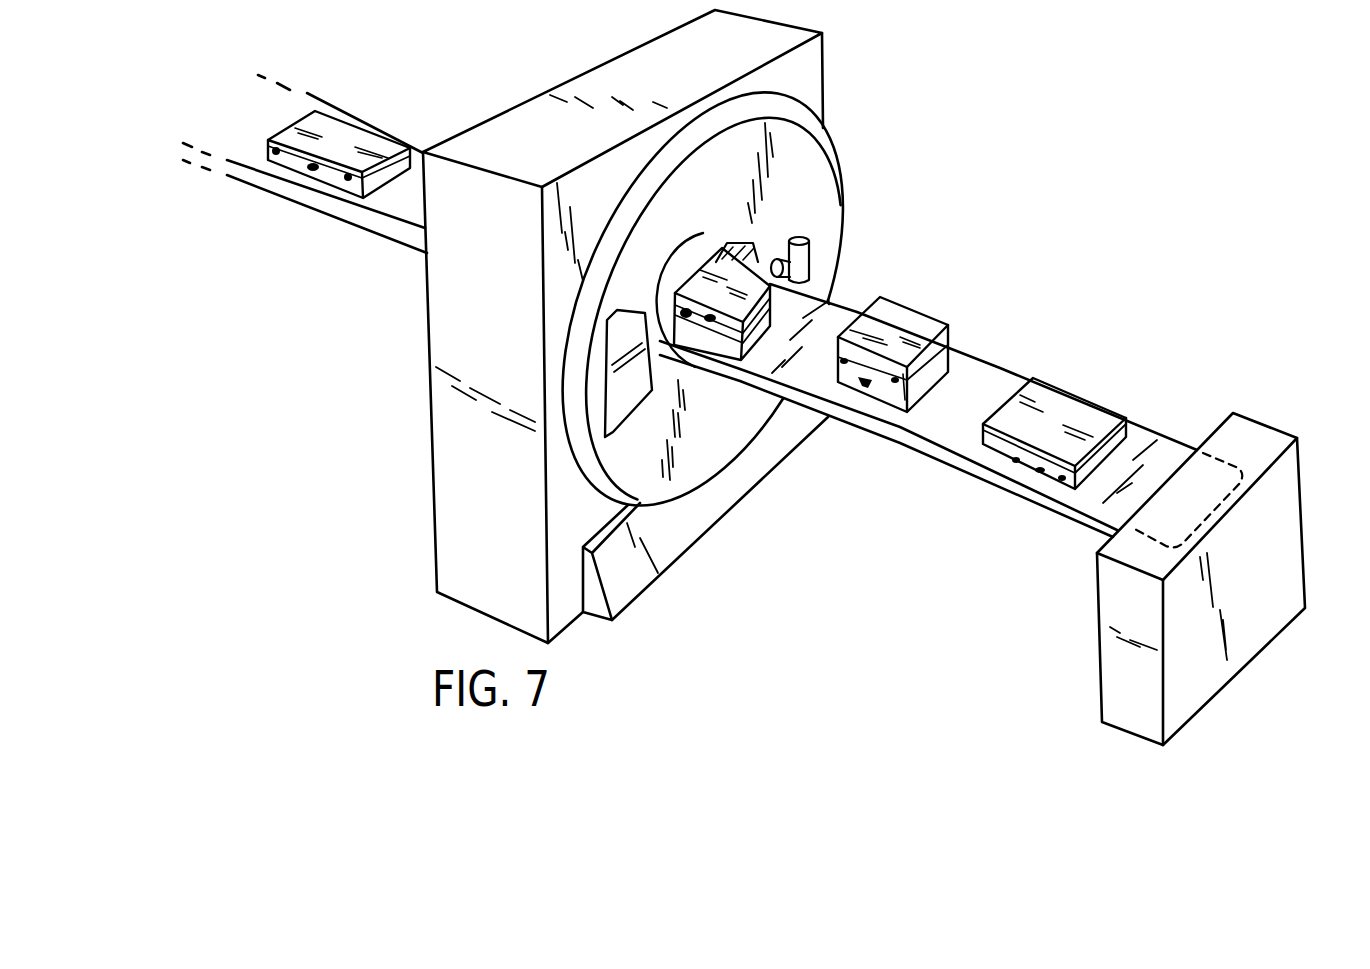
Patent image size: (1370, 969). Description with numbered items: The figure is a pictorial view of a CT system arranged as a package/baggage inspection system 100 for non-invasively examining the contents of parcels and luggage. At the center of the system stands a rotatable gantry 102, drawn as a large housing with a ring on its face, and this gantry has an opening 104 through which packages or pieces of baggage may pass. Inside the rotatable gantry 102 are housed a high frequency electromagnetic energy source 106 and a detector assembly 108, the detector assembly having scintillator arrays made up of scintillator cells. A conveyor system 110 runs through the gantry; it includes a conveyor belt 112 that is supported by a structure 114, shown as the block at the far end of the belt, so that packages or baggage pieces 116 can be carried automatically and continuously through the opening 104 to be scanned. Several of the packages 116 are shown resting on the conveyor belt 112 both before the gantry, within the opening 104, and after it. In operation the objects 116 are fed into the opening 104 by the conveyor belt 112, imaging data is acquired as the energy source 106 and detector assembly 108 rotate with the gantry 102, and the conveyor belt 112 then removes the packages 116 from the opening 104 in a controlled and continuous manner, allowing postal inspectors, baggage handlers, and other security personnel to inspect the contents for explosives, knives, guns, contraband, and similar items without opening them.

The package/baggage inspection system 100 is at (1084, 182).
The rotatable gantry 102 is at (822, 174).
The opening 104 is at (735, 249).
The high frequency electromagnetic energy source 106 is at (812, 256).
The detector assembly 108 is at (623, 407).
The conveyor system 110 is at (184, 187).
The conveyor belt 112 is at (380, 213).
The structure 114 is at (1290, 540).
The packages or baggage pieces 116 is at (355, 138).